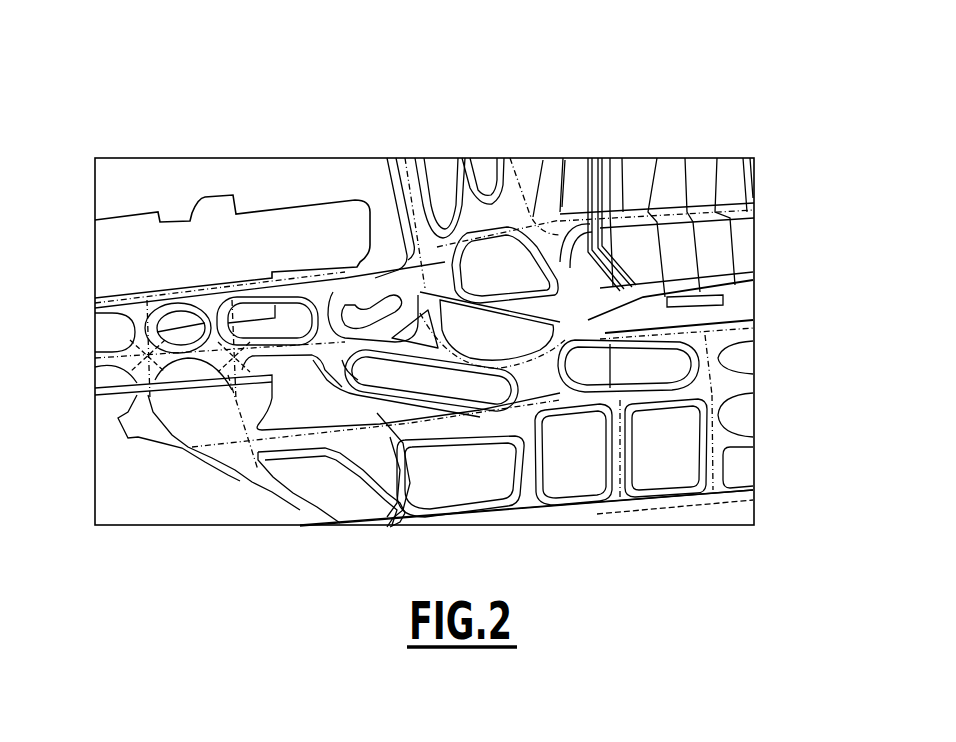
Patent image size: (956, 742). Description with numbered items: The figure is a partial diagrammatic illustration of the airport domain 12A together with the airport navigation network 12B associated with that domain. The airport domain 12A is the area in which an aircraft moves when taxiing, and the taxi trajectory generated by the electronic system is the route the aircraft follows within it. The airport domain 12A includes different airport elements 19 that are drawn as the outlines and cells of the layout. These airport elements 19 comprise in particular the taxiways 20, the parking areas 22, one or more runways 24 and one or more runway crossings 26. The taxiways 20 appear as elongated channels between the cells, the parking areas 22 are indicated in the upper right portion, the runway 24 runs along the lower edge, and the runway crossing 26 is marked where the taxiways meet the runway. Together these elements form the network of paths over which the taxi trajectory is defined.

The airport domain 12A is at (222, 152).
The airport navigation network 12B is at (594, 318).
The airport elements 19 is at (413, 173).
The taxiways 20 is at (232, 467).
The parking areas 22 is at (661, 170).
The runway 24 is at (630, 512).
The runway crossing 26 is at (716, 517).